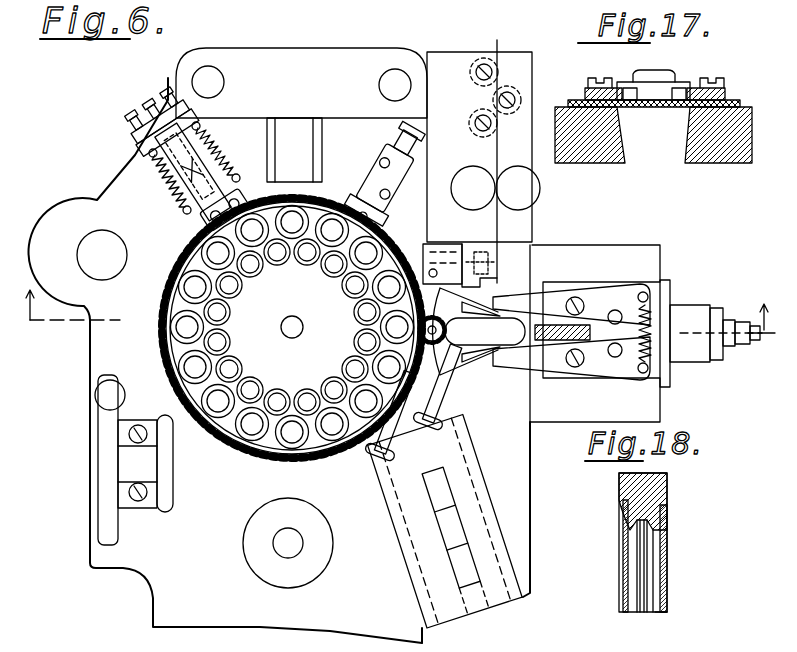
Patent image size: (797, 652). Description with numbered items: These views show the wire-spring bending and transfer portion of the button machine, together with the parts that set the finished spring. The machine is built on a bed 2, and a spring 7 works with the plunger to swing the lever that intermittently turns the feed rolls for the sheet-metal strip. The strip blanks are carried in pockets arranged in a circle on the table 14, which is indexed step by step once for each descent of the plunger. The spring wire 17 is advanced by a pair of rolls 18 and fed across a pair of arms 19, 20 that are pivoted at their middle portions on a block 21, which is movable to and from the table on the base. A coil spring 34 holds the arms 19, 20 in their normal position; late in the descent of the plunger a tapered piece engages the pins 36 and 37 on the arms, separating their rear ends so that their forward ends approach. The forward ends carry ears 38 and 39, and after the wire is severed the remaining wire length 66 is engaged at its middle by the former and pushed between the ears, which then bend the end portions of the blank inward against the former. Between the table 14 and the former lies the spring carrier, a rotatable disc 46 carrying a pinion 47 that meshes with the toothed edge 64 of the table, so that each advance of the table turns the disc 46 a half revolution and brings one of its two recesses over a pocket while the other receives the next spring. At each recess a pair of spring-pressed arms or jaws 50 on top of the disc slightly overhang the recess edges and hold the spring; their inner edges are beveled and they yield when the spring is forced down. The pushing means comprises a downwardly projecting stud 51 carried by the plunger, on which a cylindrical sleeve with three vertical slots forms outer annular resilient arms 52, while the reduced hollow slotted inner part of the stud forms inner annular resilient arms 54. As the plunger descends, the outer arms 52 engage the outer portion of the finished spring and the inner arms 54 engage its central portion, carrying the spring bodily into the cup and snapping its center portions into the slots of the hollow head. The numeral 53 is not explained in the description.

In FIG. 6, the bed 2 is at (163, 607).
In FIG. 6, the spring 7 is at (399, 301).
In FIG. 6, the table 14 is at (306, 377).
In FIG. 6, the wire 17 is at (497, 152).
In FIG. 6, the rolls 18 is at (540, 190).
In FIG. 6, the arm 19 is at (571, 304).
In FIG. 6, the arm 20 is at (571, 358).
In FIG. 6, the block 21 is at (662, 370).
In FIG. 6, the coil spring 34 is at (647, 312).
In FIG. 6, the pin 36 is at (615, 310).
In FIG. 6, the pin 37 is at (615, 357).
In FIG. 6, the ear 38 is at (481, 302).
In FIG. 6, the ear 39 is at (481, 362).
In FIG. 6, the rotatable disc 46 is at (452, 366).
In FIG. 17, the rotatable disc 46 is at (742, 100).
In FIG. 6, the pinion 47 is at (447, 372).
In FIG. 17, the spring-pressed arms or jaws 50 is at (590, 92).
In FIG. 18, the stud 51 is at (619, 490).
In FIG. 18, the annular resilient arms 52 is at (619, 554).
In FIG. 18, the insert 53 is at (670, 650).
In FIG. 18, the annular resilient arms 54 is at (640, 612).
In FIG. 6, the toothed edge 64 is at (240, 447).
In FIG. 6, the wire length 66 is at (510, 345).